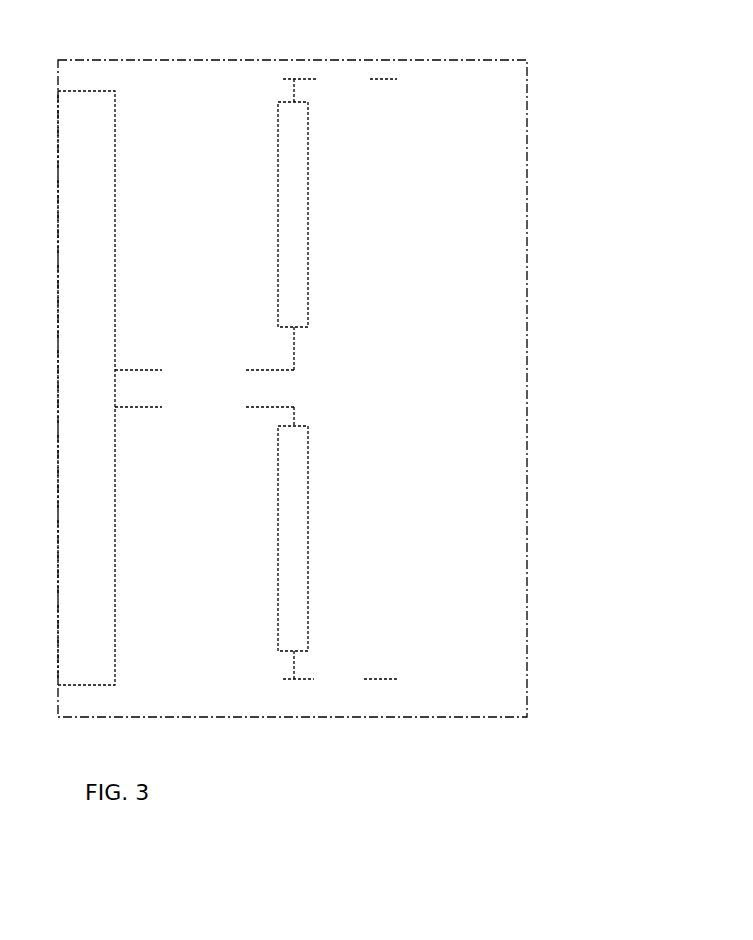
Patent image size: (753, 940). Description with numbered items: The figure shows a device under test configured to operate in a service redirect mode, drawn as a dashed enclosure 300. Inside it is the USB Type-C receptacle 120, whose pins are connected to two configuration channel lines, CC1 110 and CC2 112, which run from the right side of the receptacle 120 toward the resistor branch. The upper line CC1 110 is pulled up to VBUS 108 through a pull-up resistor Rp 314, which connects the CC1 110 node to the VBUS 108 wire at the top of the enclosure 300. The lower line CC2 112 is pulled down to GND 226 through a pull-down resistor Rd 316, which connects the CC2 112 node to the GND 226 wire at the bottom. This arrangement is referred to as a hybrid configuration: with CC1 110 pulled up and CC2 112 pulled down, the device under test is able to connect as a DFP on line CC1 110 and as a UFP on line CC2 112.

The circuit 300 is at (513, 60).
The USB receptacle 120 is at (83, 88).
The VBUS 108 is at (370, 72).
The pull-up resistor Rp 314 is at (323, 229).
The configuration channel line CC1 110 is at (245, 380).
The configuration channel line CC2 112 is at (245, 417).
The pull-down resistor Rd 316 is at (322, 547).
The GND 226 is at (378, 678).